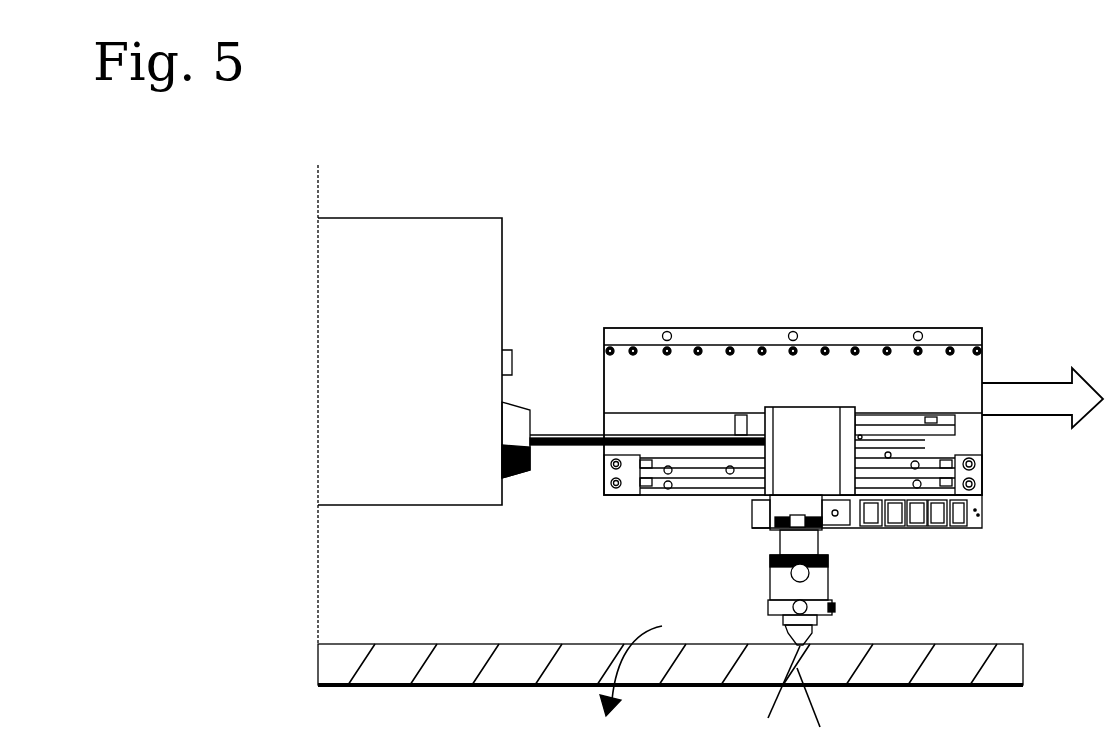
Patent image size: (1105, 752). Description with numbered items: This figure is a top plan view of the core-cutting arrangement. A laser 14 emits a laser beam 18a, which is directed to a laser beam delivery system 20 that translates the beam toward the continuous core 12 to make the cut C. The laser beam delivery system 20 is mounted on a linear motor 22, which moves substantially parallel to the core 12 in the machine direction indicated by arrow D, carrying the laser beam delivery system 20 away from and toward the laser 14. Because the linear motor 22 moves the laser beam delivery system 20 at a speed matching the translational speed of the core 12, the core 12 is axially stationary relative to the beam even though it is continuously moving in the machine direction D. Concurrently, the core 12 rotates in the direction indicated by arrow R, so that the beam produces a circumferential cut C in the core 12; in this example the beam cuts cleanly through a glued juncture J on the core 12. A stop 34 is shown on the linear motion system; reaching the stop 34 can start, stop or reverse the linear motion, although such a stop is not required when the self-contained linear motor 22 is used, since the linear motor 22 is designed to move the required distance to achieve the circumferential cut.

The core 12 is at (968, 679).
The laser 14 is at (436, 428).
The laser beam 18a is at (571, 437).
The laser beam delivery system 20 is at (816, 456).
The linear motor 22 is at (896, 397).
The stop 34 is at (953, 457).
The machine direction D is at (1042, 398).
The direction of rotation R is at (645, 662).
The glued juncture J is at (775, 698).
The circumferential cut C is at (816, 710).